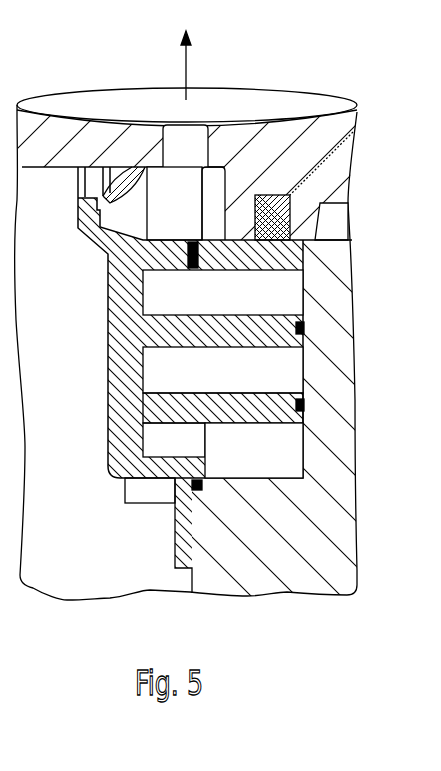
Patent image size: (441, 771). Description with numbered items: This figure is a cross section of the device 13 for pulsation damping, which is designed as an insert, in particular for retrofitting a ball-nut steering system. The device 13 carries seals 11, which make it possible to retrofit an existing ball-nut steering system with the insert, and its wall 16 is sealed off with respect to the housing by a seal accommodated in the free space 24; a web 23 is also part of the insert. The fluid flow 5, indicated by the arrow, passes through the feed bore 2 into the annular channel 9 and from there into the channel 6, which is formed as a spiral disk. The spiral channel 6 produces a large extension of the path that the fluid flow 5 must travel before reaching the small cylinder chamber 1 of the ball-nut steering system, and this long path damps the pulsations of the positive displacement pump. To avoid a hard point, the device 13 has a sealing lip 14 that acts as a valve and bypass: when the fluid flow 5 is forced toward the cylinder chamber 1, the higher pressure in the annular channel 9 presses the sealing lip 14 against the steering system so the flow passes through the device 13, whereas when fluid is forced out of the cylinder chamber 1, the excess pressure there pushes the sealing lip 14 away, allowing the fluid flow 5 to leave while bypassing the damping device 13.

The small cylinder chamber 1 is at (63, 541).
The feed bore 2 is at (178, 157).
The fluid flow 5 is at (190, 70).
The channel in the form of a spiral disk 6 is at (197, 381).
The annular channel 9 is at (172, 220).
The seal 11 is at (200, 253).
The device for damping 13 is at (123, 337).
The sealing lip 14 is at (115, 178).
The wall of the device for damping 16 is at (253, 393).
The web 23 is at (307, 442).
The free space for accommodating a seal 24 is at (310, 412).